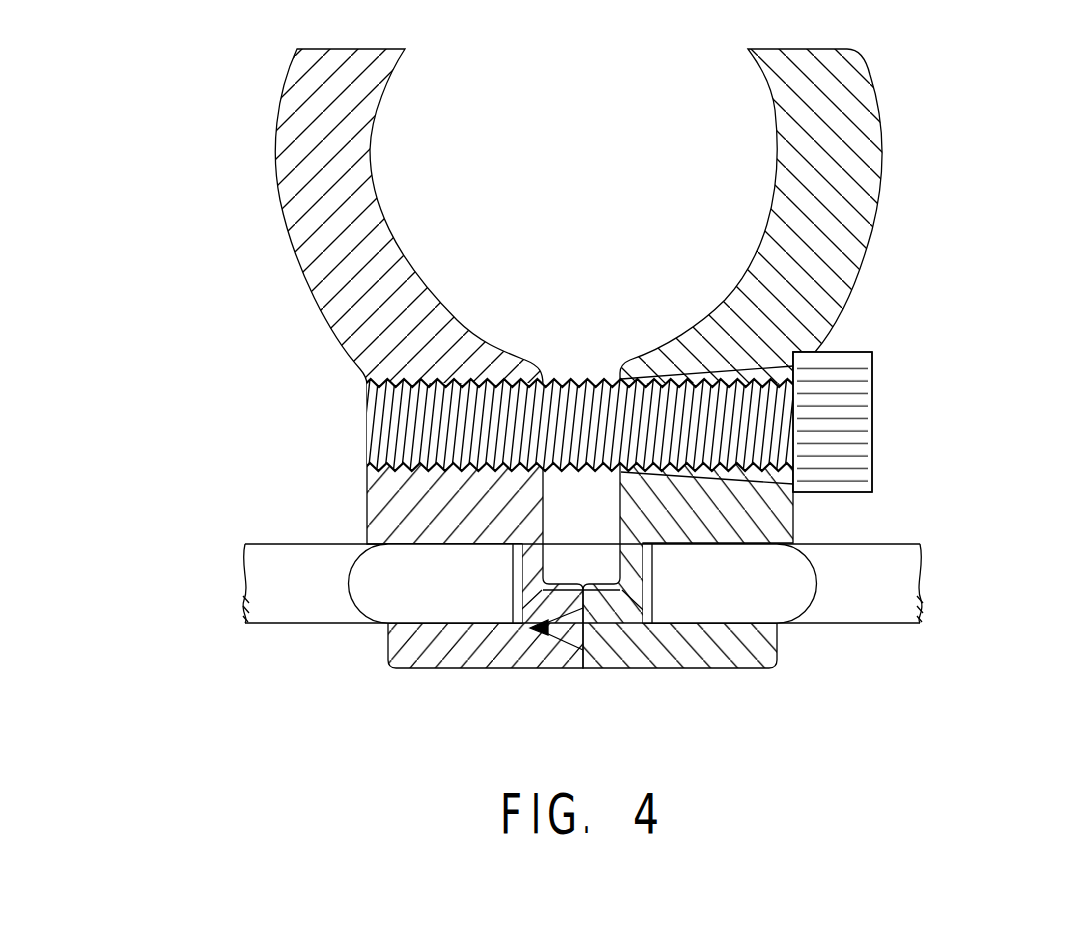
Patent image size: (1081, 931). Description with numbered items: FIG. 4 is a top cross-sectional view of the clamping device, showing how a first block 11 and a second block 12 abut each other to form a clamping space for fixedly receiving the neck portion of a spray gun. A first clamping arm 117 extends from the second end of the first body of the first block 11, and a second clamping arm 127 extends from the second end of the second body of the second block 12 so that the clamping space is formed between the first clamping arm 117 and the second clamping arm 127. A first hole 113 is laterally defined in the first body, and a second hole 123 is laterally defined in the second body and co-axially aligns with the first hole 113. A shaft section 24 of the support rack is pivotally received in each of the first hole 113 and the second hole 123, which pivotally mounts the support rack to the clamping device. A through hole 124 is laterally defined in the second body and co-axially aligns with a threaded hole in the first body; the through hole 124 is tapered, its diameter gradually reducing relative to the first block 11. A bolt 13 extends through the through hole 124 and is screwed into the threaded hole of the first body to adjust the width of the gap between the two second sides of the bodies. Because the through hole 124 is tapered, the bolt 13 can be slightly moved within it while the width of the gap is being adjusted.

The first block 11 is at (366, 391).
The first clamping arm 117 is at (277, 190).
The first hole 113 is at (517, 592).
The second block 12 is at (816, 398).
The second clamping arm 127 is at (863, 252).
The through hole 124 is at (747, 473).
The second hole 123 is at (653, 588).
The bolt 13 is at (847, 452).
The shaft section 24 is at (745, 583).